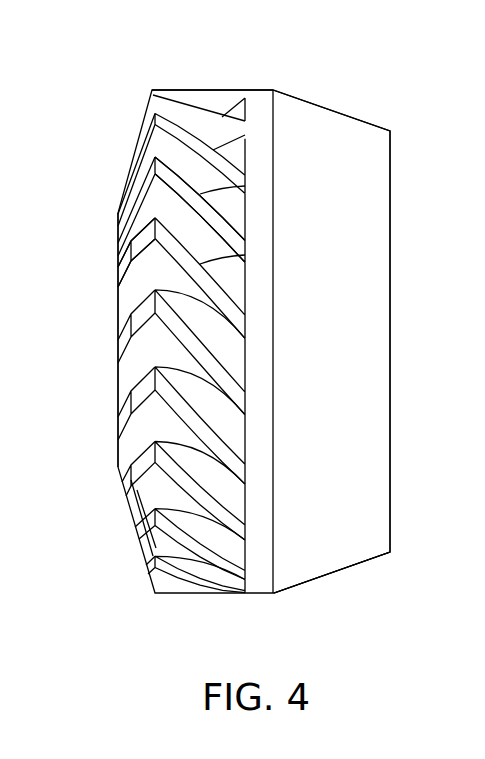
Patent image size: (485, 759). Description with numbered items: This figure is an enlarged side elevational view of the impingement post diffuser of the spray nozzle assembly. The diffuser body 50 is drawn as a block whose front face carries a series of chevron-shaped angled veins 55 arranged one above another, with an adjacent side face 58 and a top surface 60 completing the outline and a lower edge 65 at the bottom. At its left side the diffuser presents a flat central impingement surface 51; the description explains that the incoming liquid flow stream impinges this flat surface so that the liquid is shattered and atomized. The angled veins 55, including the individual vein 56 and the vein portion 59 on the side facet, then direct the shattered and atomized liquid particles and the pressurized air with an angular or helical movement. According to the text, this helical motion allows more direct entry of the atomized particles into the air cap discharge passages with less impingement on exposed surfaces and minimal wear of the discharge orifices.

The tread block 50 is at (273, 84).
The flat central impingement surface 51 is at (120, 327).
The angled veins 55 is at (191, 140).
The rib 56 is at (213, 182).
The side face 58 is at (232, 272).
The left facet rib 59 is at (137, 250).
The top surface 60 is at (217, 118).
The bottom edge 65 is at (330, 575).